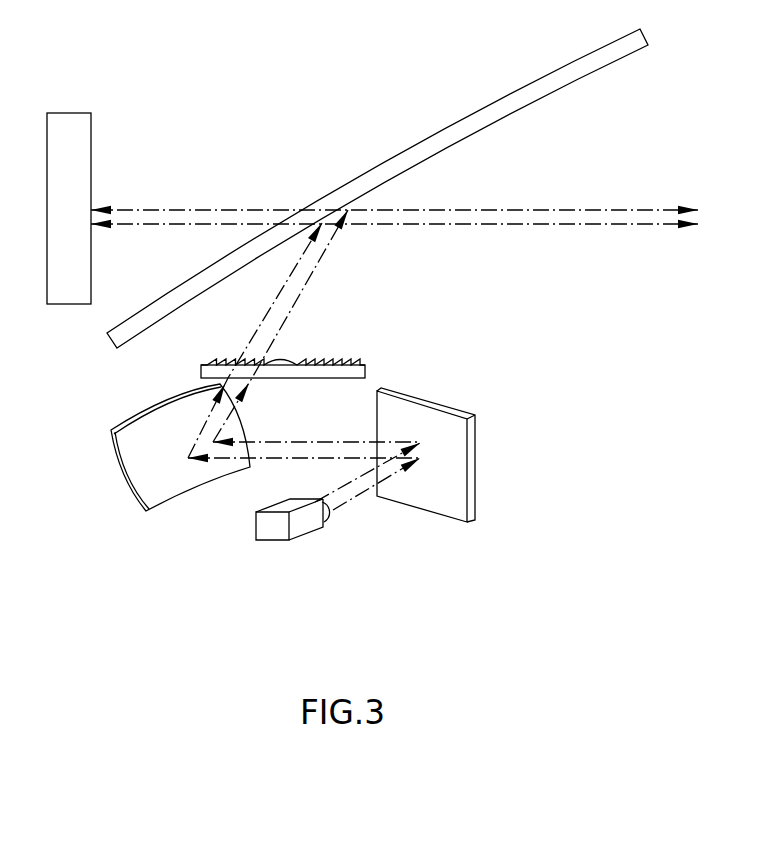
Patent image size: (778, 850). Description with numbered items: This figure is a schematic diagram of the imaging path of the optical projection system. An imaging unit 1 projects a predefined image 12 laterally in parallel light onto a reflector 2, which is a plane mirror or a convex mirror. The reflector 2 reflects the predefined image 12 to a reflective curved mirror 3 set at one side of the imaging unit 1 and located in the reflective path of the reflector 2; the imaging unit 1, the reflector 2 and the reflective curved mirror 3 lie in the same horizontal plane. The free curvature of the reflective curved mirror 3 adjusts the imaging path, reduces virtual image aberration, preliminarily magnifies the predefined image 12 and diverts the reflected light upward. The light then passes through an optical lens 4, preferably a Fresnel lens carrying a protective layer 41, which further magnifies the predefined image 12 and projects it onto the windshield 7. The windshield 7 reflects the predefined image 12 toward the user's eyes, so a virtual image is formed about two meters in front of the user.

The imaging unit 1 is at (257, 533).
The reflector 2 is at (475, 497).
The reflective curved mirror 3 is at (110, 450).
The optical lens 4 is at (367, 370).
The protective layer 41 is at (320, 358).
The windshield 7 is at (460, 122).
The predefined image 12 is at (67, 113).